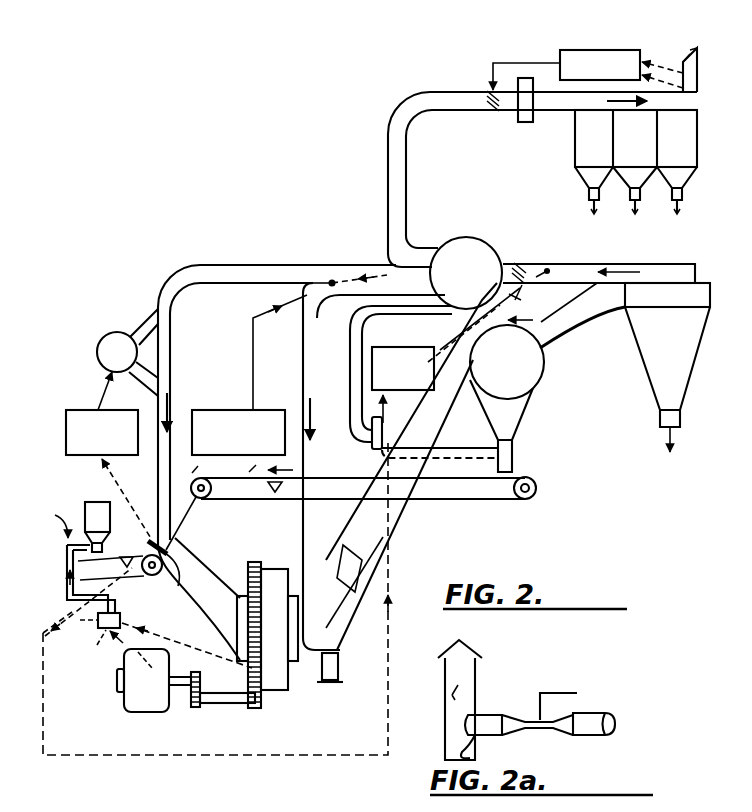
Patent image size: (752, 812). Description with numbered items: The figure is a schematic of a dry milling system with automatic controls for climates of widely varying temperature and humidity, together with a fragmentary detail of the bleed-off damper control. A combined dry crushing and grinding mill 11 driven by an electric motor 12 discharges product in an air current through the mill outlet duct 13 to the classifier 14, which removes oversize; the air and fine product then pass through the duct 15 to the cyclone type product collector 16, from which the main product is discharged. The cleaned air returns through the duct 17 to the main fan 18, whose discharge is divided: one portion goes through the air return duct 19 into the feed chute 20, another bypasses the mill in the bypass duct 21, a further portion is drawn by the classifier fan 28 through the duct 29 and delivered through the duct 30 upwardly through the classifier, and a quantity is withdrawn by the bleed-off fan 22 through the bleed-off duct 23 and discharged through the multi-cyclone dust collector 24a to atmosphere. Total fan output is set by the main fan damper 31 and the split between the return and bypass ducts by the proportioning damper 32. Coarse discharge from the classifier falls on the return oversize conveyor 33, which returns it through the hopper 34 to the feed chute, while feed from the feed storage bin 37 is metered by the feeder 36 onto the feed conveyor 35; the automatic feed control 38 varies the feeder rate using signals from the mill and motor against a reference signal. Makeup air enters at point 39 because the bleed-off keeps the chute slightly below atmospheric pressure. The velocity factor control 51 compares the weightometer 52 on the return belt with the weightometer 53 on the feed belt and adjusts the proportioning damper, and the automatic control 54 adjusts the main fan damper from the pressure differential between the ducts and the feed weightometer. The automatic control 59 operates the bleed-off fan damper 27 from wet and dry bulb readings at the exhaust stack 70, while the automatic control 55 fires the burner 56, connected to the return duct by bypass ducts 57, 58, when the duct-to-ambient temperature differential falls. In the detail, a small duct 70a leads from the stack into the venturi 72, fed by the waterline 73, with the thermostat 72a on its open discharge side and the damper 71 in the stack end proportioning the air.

In FIG. 2, the combined dry crushing and grinding mill 11 is at (278, 571).
In FIG. 2, the electric motor 12 is at (132, 702).
In FIG. 2, the mill outlet duct 13 is at (392, 535).
In FIG. 2, the classifier 14 is at (543, 372).
In FIG. 2, the duct 15 is at (600, 320).
In FIG. 2, the cyclone type product collector 16 is at (642, 347).
In FIG. 2, the duct 17 is at (562, 264).
In FIG. 2, the main fan 18 is at (458, 244).
In FIG. 2, the air return duct 19 is at (175, 347).
In FIG. 2, the feed chute 20 is at (196, 558).
In FIG. 2, the bypass duct 21 is at (305, 350).
In FIG. 2, the bleed-off fan 22 is at (524, 78).
In FIG. 2, the bleed-off duct 23 is at (404, 168).
In FIG. 2, the multi-cyclone dust collector 24a is at (578, 140).
In FIG. 2, the bleed-off fan damper 27 is at (492, 92).
In FIG. 2, the classifier fan 28 is at (405, 425).
In FIG. 2, the duct 29 is at (353, 365).
In FIG. 2, the duct 30 is at (510, 445).
In FIG. 2, the main fan damper 31 is at (516, 264).
In FIG. 2, the proportioning damper 32 is at (332, 283).
In FIG. 2, the return oversize conveyor 33 is at (518, 497).
In FIG. 2, the hopper 34 is at (183, 498).
In FIG. 2, the feed conveyor 35 is at (160, 578).
In FIG. 2, the feeder 36 is at (148, 546).
In FIG. 2, the feed storage bin 37 is at (92, 518).
In FIG. 2, the automatic feed control 38 is at (106, 636).
In FIG. 2, the point 39 is at (126, 620).
In FIG. 2, the velocity factor control 51 is at (215, 412).
In FIG. 2, the weightometer 52 is at (268, 487).
In FIG. 2, the weightometer 53 is at (87, 558).
In FIG. 2, the automatic control 54 is at (402, 354).
In FIG. 2, the automatic control 55 is at (80, 414).
In FIG. 2, the burner 56 is at (113, 335).
In FIG. 2, the bypass duct 57 is at (150, 306).
In FIG. 2, the bypass duct 58 is at (152, 382).
In FIG. 2, the automatic control 59 is at (594, 47).
In FIG. 2, the exhaust stack 70 is at (690, 52).
In FIG. 2A, the exhaust stack 70 is at (478, 745).
In FIG. 2A, the duct 70a is at (500, 706).
In FIG. 2A, the damper 71 is at (462, 692).
In FIG. 2A, the venturi 72 is at (580, 712).
In FIG. 2A, the thermostat 72a is at (598, 735).
In FIG. 2A, the waterline 73 is at (562, 693).